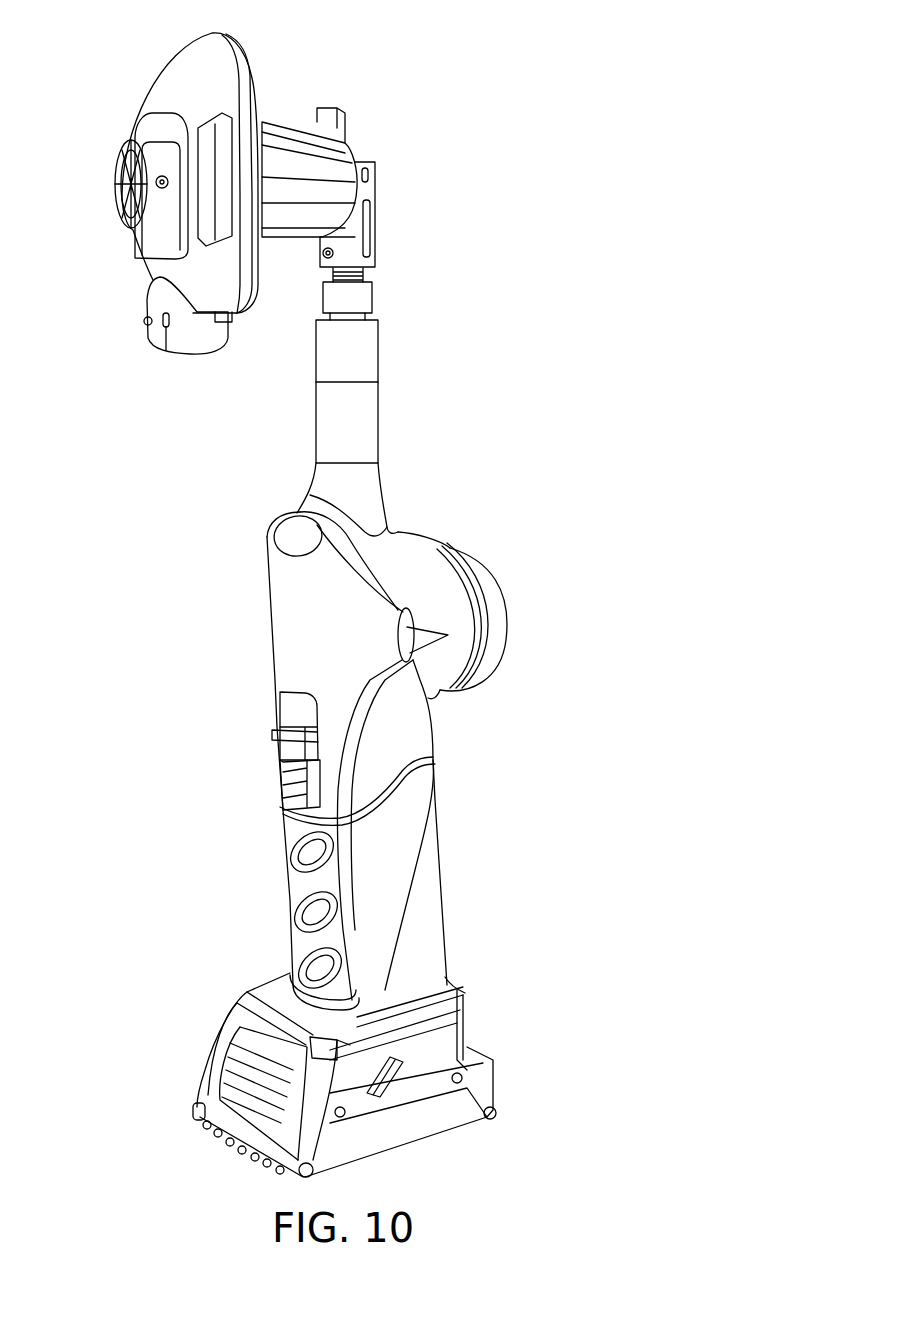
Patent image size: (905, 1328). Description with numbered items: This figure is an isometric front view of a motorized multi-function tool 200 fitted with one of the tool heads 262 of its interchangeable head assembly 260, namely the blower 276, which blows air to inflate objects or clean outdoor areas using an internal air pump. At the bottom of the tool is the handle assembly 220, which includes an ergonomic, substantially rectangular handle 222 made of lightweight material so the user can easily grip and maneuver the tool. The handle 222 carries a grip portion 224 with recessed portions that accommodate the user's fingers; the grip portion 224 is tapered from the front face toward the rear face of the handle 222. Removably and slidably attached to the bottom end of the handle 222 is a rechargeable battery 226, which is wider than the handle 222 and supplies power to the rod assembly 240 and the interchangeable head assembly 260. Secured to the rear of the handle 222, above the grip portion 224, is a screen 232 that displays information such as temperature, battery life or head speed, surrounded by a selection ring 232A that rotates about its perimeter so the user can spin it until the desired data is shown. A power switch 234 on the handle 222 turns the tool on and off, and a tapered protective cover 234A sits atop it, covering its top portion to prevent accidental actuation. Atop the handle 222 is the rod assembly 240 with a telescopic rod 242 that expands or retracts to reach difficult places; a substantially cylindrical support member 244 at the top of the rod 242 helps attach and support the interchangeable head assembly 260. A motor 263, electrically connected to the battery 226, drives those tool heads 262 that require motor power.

The motorized multi-function tool 200 is at (388, 50).
The handle assembly 220 is at (445, 884).
The handle 222 is at (425, 862).
The grip portion 224 is at (315, 912).
The battery 226 is at (380, 1132).
The screen 232 is at (500, 600).
The selection ring 232A is at (465, 556).
The power switch 234 is at (292, 790).
The protective cover 234A is at (298, 716).
The rod assembly 240 is at (385, 408).
The rod 242 is at (337, 416).
The support member 244 is at (348, 248).
The interchangeable head assembly 260 is at (285, 128).
The tool heads 262 is at (140, 267).
The motor 263 is at (308, 213).
The blower 276 is at (150, 100).